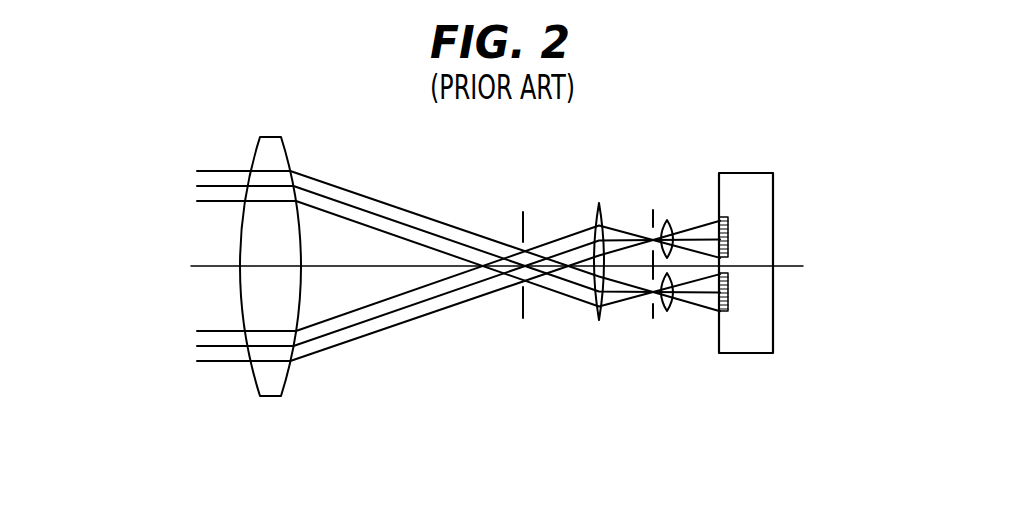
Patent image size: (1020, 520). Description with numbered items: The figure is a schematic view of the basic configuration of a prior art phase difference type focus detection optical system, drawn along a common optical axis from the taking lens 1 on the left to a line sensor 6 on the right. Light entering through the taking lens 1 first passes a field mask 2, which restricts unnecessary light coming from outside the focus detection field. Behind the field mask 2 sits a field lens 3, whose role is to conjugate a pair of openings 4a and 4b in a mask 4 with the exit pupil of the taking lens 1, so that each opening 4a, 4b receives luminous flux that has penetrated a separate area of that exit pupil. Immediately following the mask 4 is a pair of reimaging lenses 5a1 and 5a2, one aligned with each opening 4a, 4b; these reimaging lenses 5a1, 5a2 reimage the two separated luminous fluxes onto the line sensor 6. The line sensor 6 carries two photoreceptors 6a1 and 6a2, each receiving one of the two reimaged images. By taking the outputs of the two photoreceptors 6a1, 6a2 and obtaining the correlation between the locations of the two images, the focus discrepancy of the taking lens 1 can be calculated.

The taking lens 1 is at (270, 385).
The field mask 2 is at (521, 322).
The field lens 3 is at (597, 326).
The mask 4 is at (652, 320).
The opening 4a is at (649, 229).
The opening 4b is at (650, 303).
The reimaging lens 5a1 is at (667, 220).
The reimaging lens 5a2 is at (668, 311).
The line sensor 6 is at (763, 189).
The photoreceptor 6a1 is at (732, 217).
The photoreceptor 6a2 is at (730, 305).